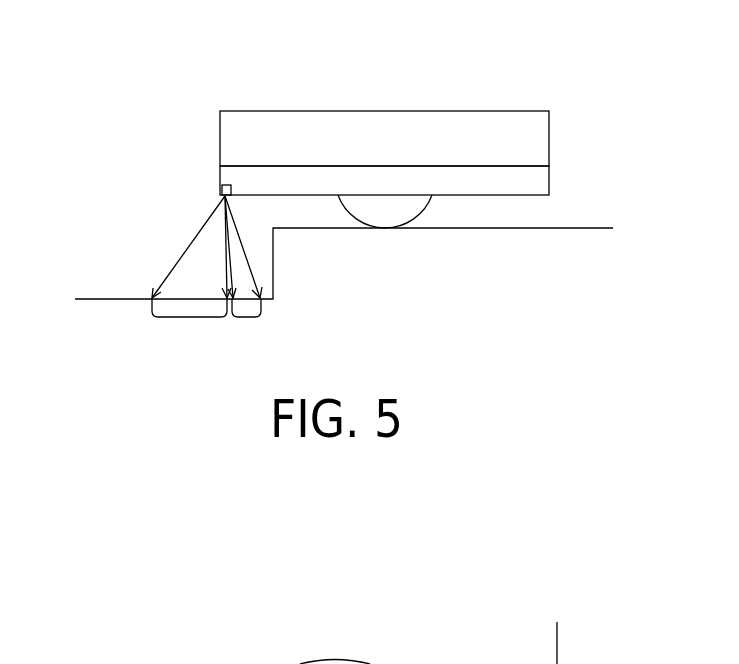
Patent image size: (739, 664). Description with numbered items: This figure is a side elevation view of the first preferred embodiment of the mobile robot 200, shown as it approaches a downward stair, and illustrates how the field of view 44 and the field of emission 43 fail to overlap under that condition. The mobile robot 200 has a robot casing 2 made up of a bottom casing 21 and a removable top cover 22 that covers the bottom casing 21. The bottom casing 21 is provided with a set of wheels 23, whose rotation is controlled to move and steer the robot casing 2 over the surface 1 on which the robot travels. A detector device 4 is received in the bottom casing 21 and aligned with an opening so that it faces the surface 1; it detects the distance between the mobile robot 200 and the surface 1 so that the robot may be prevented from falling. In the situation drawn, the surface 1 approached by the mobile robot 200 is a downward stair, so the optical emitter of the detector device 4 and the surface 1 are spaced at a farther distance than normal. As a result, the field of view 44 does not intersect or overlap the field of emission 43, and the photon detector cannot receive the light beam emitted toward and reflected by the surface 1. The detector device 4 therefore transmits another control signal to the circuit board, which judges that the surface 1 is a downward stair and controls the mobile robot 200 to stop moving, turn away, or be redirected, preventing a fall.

The mobile robot 200 is at (183, 95).
The robot casing 2 is at (565, 108).
The removable top cover 22 is at (482, 131).
The bottom casing 21 is at (537, 185).
The wheels 23 is at (393, 212).
The detector device 4 is at (220, 188).
The surface 1 is at (113, 299).
The field of view 44 is at (190, 318).
The field of emission 43 is at (246, 318).